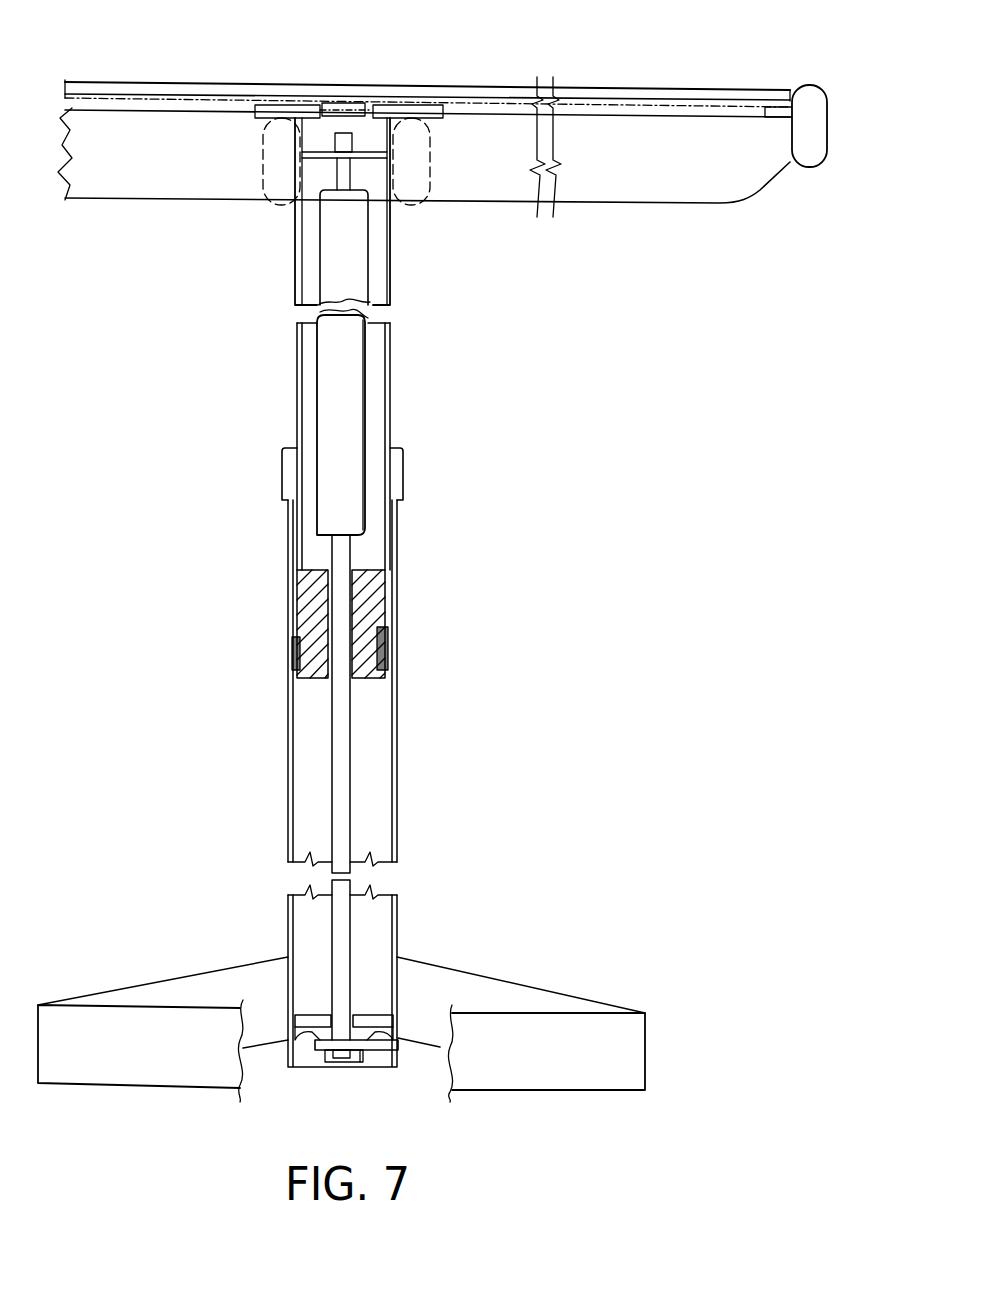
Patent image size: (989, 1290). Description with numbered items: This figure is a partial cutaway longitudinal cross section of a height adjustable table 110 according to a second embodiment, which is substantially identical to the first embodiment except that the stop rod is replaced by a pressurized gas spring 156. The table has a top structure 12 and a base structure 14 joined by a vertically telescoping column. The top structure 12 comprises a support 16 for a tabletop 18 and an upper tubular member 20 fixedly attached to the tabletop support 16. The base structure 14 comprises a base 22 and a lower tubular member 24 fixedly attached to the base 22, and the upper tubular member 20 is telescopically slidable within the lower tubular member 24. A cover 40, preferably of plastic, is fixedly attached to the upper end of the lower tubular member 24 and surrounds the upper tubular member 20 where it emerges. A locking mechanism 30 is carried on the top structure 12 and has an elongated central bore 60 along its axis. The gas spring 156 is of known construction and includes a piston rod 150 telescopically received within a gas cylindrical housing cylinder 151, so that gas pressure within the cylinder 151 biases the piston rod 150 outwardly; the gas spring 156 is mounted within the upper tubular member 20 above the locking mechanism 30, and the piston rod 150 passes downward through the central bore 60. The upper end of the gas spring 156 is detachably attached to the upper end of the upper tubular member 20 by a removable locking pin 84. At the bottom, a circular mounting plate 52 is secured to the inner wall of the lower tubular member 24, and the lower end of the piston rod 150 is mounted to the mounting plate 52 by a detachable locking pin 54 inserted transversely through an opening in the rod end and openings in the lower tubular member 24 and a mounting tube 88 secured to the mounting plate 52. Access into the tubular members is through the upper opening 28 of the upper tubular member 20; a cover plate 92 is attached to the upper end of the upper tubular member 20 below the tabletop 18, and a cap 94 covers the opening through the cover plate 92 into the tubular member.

The height adjustable table 110 is at (776, 60).
The tabletop 18 is at (635, 90).
The tabletop support 16 is at (805, 170).
The upper opening 28 is at (327, 113).
The cover plate 92 is at (411, 113).
The cap 94 is at (330, 103).
The top structure 12 is at (546, 298).
The removable locking pin 84 is at (330, 108).
The upper tubular member 20 is at (390, 338).
The cylinder 151 is at (338, 353).
The pressurized gas spring 156 is at (376, 410).
The cover 40 is at (420, 456).
The lower tubular member 24 is at (395, 693).
The locking mechanism 30 is at (302, 698).
The central bore 60 is at (360, 568).
The piston rod 150 is at (350, 768).
The base structure 14 is at (560, 864).
The base 22 is at (105, 1005).
The mounting plate 52 is at (372, 1015).
The detachable locking pin 54 is at (390, 1053).
The mounting tube 88 is at (315, 1060).